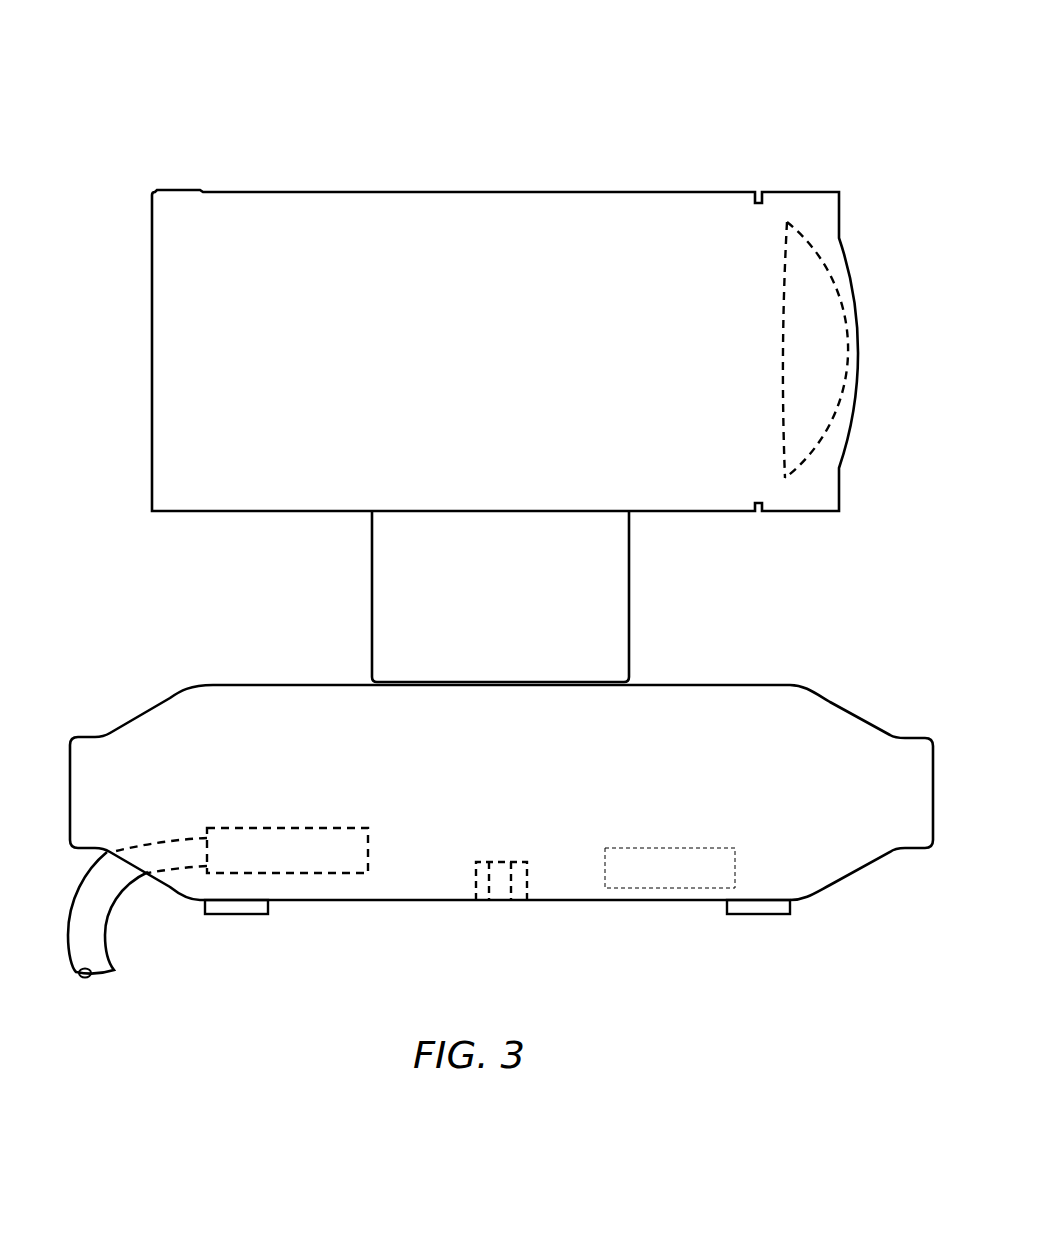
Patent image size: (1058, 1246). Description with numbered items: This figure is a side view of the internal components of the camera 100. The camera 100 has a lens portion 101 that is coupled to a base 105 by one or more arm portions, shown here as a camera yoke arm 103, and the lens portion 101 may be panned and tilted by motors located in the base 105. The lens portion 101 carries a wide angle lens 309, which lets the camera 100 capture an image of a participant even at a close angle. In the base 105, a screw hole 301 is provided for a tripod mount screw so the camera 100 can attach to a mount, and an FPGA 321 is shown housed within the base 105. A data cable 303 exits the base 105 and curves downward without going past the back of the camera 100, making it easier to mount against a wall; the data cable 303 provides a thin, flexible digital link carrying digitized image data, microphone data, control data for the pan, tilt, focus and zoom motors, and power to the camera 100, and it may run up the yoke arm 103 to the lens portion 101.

The camera 100 is at (816, 79).
The lens portion 101 is at (860, 183).
The camera yoke arm 103 is at (610, 542).
The base 105 is at (764, 678).
The screw hole 301 is at (502, 883).
The data cable 303 is at (92, 945).
The wide angle lens 309 is at (835, 347).
The FPGA 321 is at (670, 868).